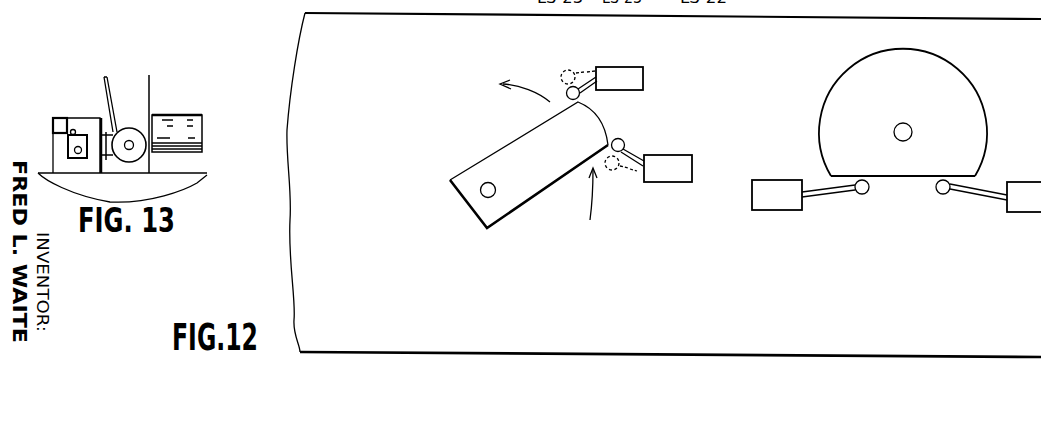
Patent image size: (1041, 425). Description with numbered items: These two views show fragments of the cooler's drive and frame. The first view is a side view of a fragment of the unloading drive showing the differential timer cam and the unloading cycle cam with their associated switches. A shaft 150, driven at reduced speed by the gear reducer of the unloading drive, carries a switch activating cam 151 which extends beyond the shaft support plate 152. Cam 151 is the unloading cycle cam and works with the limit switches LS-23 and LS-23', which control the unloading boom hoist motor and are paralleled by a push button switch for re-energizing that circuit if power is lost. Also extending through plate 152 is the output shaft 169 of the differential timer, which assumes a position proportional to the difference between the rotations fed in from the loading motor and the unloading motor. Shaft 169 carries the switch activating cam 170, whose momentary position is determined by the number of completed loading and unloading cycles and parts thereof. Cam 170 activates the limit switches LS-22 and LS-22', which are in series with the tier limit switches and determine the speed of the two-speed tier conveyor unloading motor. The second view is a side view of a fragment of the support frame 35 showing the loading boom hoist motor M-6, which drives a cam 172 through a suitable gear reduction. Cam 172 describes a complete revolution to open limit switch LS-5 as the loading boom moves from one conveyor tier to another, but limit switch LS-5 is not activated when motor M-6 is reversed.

In FIG. 13, the base 35 is at (230, 163).
In FIG. 13, the limit switch LS-5 is at (61, 104).
In FIG. 13, the cam 172 is at (82, 135).
In FIG. 13, the boom hoist motor M-6 is at (246, 110).
In FIG. 12, the shaft support plate 152 is at (287, 203).
In FIG. 12, the switch activating cam 151 is at (510, 140).
In FIG. 12, the shaft 150 is at (481, 186).
In FIG. 12, the limit switch LS-23 is at (630, 74).
In FIG. 12, the limit switch LS-23' is at (656, 154).
In FIG. 12, the switch activating cam 170 is at (1018, 95).
In FIG. 12, the output shaft 169 is at (904, 122).
In FIG. 12, the limit switch LS-22 is at (807, 218).
In FIG. 12, the limit switch LS-22' is at (988, 218).